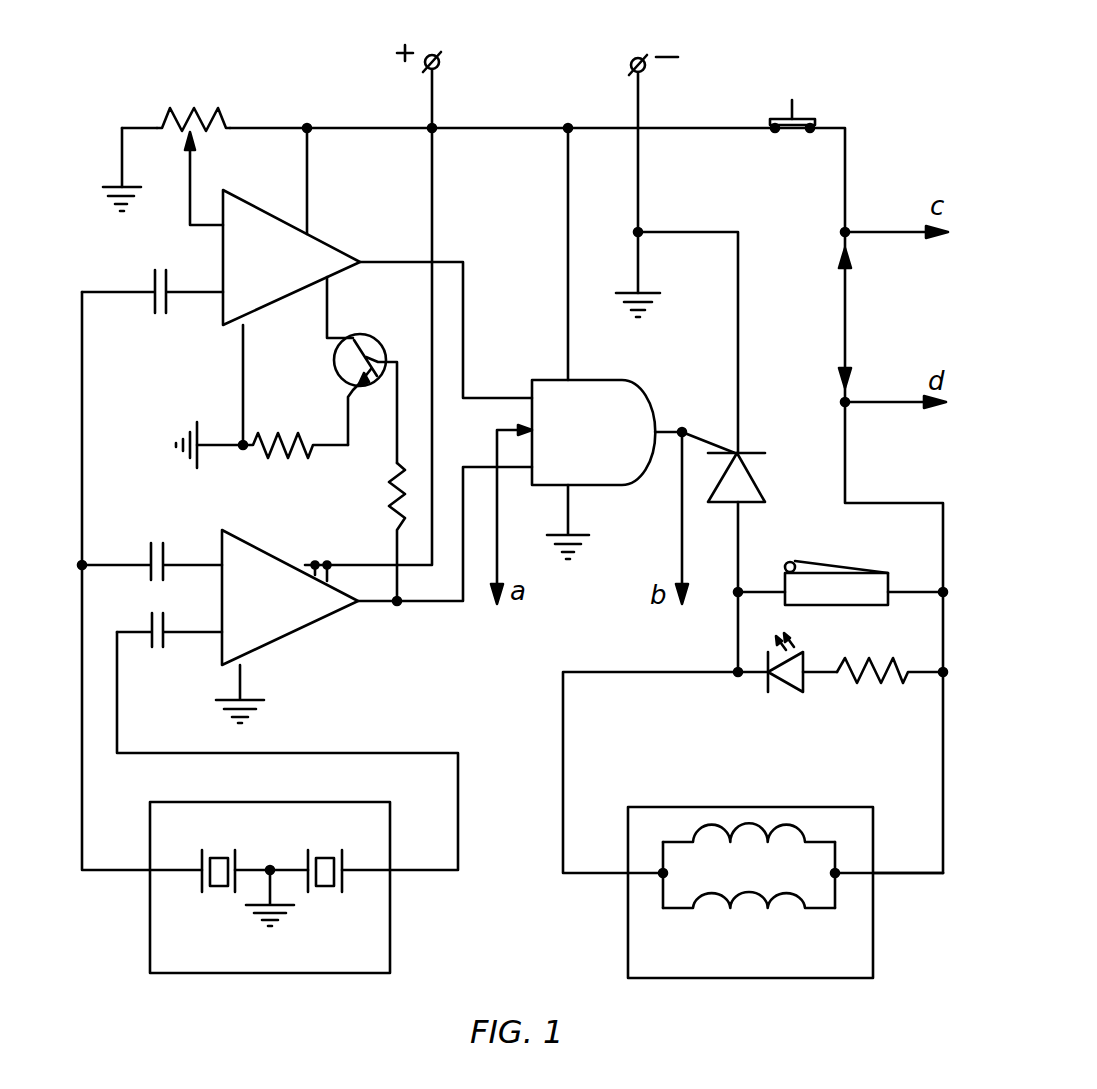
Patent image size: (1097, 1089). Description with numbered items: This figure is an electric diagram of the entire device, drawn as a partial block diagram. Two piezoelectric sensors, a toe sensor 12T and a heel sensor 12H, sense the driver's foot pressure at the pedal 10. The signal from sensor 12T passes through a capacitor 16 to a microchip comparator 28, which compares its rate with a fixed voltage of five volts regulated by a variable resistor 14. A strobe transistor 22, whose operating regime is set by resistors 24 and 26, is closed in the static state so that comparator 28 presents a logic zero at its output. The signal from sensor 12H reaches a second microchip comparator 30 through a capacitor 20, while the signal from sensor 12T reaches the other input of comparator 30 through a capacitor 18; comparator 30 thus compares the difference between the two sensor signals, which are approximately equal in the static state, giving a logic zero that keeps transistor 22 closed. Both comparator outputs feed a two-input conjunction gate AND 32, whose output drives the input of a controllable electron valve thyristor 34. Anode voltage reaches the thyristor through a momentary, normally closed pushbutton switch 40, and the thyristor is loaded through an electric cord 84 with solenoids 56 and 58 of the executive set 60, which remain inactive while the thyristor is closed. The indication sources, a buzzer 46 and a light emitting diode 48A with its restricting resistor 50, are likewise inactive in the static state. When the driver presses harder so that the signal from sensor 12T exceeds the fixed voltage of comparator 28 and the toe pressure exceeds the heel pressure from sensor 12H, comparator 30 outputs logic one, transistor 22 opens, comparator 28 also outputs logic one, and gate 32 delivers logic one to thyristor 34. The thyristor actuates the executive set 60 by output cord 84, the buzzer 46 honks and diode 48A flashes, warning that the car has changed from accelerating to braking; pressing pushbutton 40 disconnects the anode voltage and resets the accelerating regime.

The pedal 10 is at (355, 928).
The piezoelectric sensor 12T is at (217, 857).
The piezoelectric sensor 12H is at (333, 842).
The variable resistor 14 is at (199, 113).
The capacitor 16 is at (151, 303).
The capacitor 18 is at (150, 551).
The capacitor 20 is at (158, 642).
The strobe transistor 22 is at (336, 366).
The resistor 24 is at (284, 452).
The resistor 26 is at (394, 519).
The microchip comparator 28 is at (287, 237).
The microchip comparator 30 is at (270, 626).
The conjunction gate AND 32 is at (566, 392).
The thyristor 34 is at (742, 479).
The pushbutton switch 40 is at (806, 118).
The buzzer 46 is at (842, 586).
The light emitting diode 48A is at (790, 680).
The restricting resistor 50 is at (870, 678).
The solenoid 56 is at (752, 828).
The solenoid 58 is at (766, 902).
The executive set 60 is at (665, 931).
The electric cord 84 is at (912, 876).